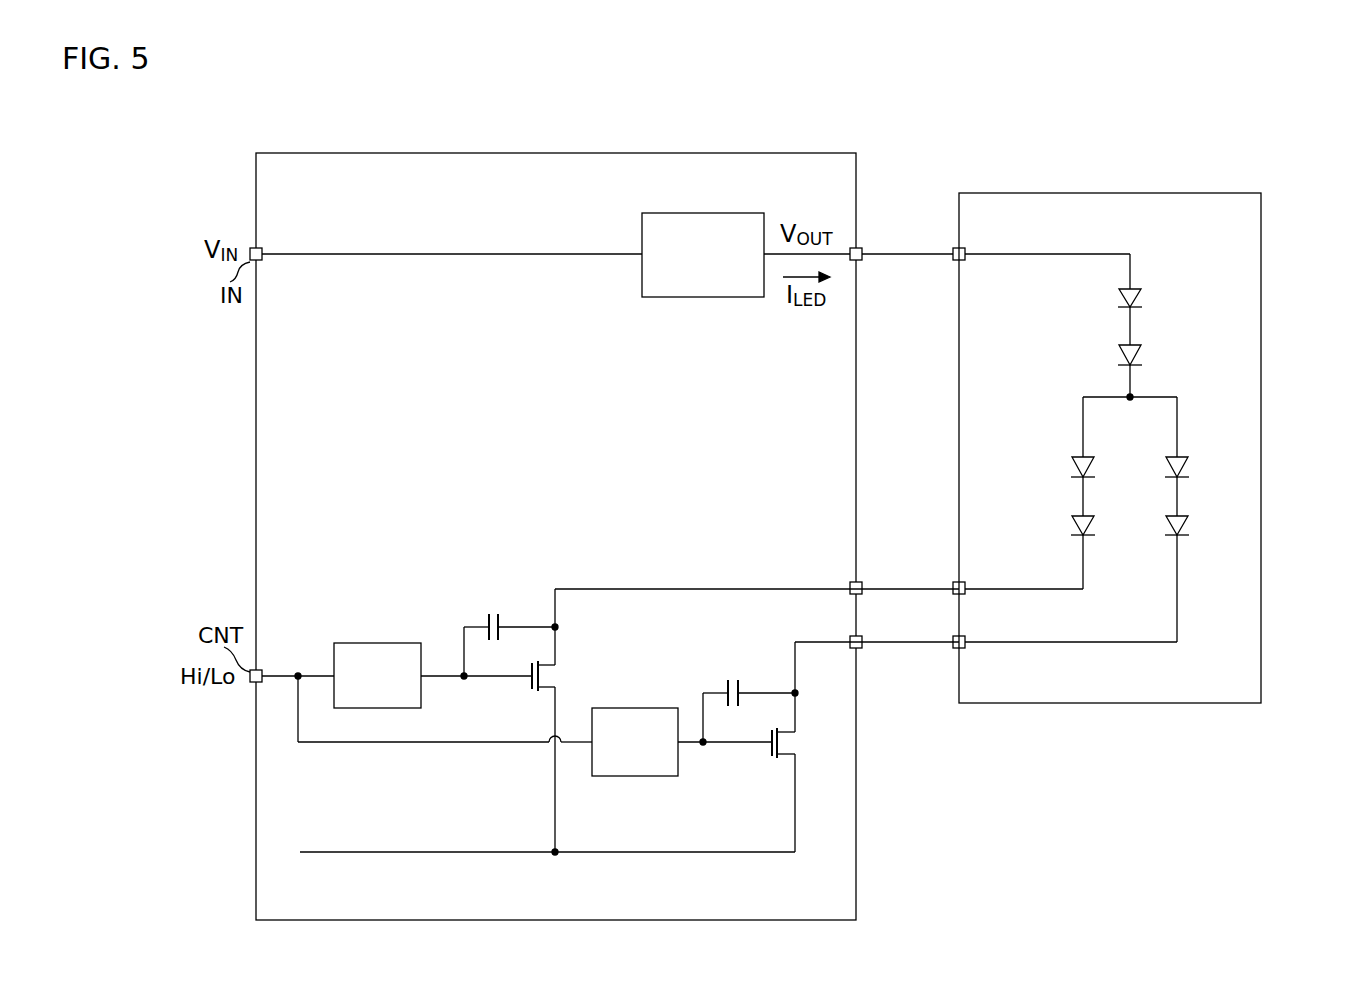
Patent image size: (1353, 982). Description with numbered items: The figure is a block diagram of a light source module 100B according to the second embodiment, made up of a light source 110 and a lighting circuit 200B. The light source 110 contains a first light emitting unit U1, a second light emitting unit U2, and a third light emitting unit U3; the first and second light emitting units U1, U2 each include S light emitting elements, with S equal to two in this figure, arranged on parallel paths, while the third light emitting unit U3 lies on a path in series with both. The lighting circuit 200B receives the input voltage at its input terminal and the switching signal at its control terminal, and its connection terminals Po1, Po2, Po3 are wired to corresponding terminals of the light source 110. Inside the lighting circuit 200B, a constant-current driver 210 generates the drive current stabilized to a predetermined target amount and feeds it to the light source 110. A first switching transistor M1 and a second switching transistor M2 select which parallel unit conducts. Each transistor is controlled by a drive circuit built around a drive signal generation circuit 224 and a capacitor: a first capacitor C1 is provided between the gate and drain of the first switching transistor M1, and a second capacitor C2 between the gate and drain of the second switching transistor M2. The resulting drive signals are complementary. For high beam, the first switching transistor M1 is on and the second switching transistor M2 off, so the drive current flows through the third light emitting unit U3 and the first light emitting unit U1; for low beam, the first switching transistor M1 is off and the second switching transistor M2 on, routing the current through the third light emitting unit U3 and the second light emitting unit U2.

The light source module 100B is at (1342, 91).
The lighting circuit 200B is at (738, 153).
The constant-current driver 210 is at (704, 213).
The light source 110 is at (1140, 193).
The drive signal generation circuit 224 is at (366, 643).
The first switching transistor M1 is at (808, 747).
The second switching transistor M2 is at (560, 674).
The first capacitor C1 is at (728, 678).
The second capacitor C2 is at (489, 612).
The first light emitting unit U1 is at (1171, 490).
The second light emitting unit U2 is at (1079, 514).
The third light emitting unit U3 is at (1106, 323).
The connection terminal Po1 is at (862, 249).
The connection terminal Po2 is at (862, 583).
The connection terminal Po3 is at (862, 650).